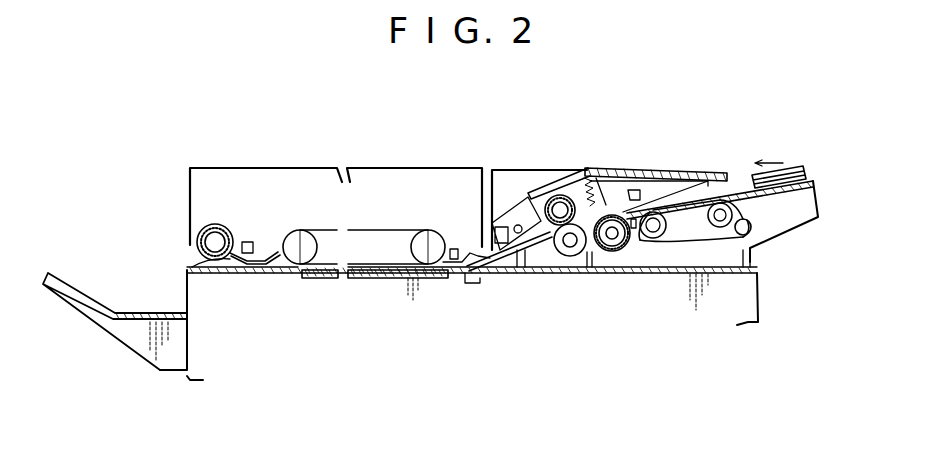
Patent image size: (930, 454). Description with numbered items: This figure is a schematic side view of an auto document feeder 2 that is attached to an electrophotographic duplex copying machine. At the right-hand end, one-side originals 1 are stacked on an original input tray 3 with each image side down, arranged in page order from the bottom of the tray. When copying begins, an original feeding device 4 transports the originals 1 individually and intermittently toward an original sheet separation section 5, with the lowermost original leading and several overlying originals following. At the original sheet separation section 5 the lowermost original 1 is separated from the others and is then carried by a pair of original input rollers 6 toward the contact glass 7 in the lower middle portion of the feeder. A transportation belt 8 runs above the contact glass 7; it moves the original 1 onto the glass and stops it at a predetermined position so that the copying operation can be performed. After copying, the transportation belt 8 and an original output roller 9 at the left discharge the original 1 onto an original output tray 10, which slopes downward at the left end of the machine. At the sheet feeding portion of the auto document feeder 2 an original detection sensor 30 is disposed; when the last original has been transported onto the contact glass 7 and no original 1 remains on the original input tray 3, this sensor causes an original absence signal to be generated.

The one-side original 1 is at (793, 168).
The auto document feeder 2 is at (533, 163).
The original input tray 3 is at (738, 192).
The original feeding device 4 is at (667, 225).
The original sheet separation section 5 is at (605, 253).
The original input rollers 6 is at (567, 256).
The contact glass 7 is at (377, 280).
The transportation belt 8 is at (400, 228).
The original output roller 9 is at (223, 230).
The original output tray 10 is at (101, 303).
The original detection sensor 30 is at (635, 230).